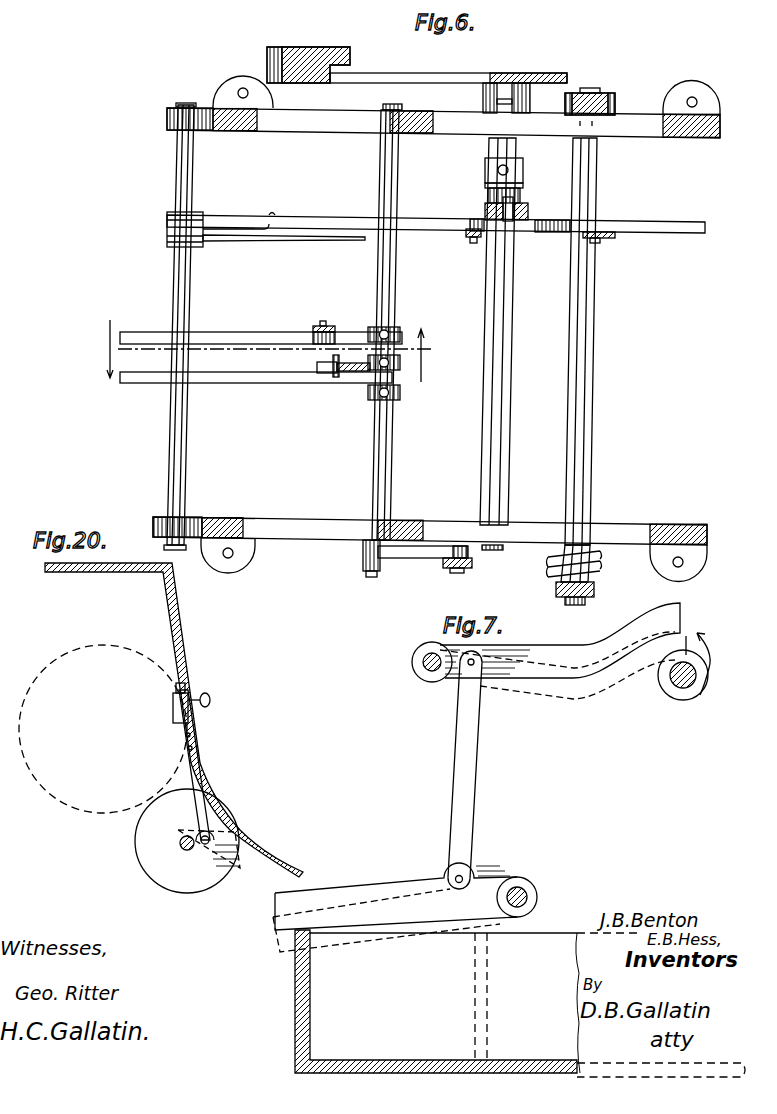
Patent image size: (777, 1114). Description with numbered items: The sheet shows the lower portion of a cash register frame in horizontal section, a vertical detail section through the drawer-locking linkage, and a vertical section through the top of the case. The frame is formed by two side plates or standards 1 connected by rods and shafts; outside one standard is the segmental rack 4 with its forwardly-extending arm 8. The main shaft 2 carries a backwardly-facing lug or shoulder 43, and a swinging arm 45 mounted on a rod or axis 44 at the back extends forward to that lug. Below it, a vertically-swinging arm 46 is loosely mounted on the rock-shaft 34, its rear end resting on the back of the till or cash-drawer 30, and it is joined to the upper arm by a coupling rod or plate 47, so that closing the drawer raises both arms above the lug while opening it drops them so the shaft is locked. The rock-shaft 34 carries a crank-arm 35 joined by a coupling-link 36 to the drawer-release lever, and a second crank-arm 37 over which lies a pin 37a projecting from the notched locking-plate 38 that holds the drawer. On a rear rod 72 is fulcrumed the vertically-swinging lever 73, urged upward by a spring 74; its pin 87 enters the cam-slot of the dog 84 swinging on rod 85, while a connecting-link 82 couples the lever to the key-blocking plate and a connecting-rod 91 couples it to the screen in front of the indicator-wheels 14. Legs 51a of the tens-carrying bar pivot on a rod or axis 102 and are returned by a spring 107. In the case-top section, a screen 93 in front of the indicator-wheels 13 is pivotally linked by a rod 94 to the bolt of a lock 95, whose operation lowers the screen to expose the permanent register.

In FIG. 6, the side plates or standards 1 is at (347, 128).
In FIG. 6, the forwardly-extending arm 8 is at (356, 47).
In FIG. 6, the segmental rack 4 is at (448, 84).
In FIG. 6, the legs 51a is at (612, 92).
In FIG. 6, the rod 72 is at (193, 279).
In FIG. 6, the rock-shaft 34 is at (398, 271).
In FIG. 7, the rock-shaft 34 is at (533, 892).
In FIG. 6, the vertically-swinging lever 73 is at (437, 214).
In FIG. 6, the spring 74 is at (320, 240).
In FIG. 6, the rod 85 is at (512, 337).
In FIG. 6, the pin 87 is at (522, 198).
In FIG. 6, the dog 84 is at (528, 208).
In FIG. 6, the connecting-rod 91 is at (468, 236).
In FIG. 6, the connecting-link 82 is at (605, 238).
In FIG. 6, the rod or axis 102 is at (592, 367).
In FIG. 6, the spring 107 is at (603, 572).
In FIG. 6, the vertically-swinging arm 46 is at (264, 348).
In FIG. 7, the vertically-swinging arm 46 is at (387, 890).
In FIG. 6, the coupling rod or plate 47 is at (337, 327).
In FIG. 7, the coupling rod or plate 47 is at (470, 775).
In FIG. 6, the vertically-swinging plate 38 is at (260, 393).
In FIG. 6, the pin 37a is at (330, 377).
In FIG. 6, the second crank-arm 37 is at (363, 372).
In FIG. 6, the crank-arm 35 is at (423, 558).
In FIG. 6, the coupling-link 36 is at (473, 566).
In FIG. 7, the swinging arm 45 is at (558, 641).
In FIG. 7, the rod or axis 44 is at (412, 662).
In FIG. 7, the main shaft 2 is at (690, 684).
In FIG. 7, the lug or shoulder 43 is at (708, 662).
In FIG. 7, the till or cash-drawer 30 is at (520, 1003).
In FIG. 20, the second series of indicator-wheels 14 is at (161, 720).
In FIG. 20, the indicator-wheels 13 is at (187, 841).
In FIG. 20, the screen 93 is at (213, 825).
In FIG. 20, the rod 94 is at (200, 780).
In FIG. 20, the lock 95 is at (173, 710).